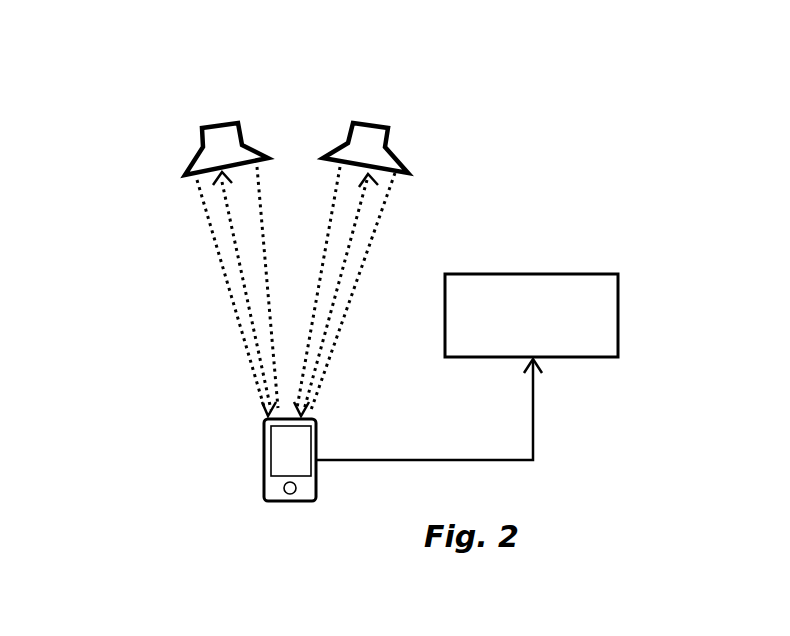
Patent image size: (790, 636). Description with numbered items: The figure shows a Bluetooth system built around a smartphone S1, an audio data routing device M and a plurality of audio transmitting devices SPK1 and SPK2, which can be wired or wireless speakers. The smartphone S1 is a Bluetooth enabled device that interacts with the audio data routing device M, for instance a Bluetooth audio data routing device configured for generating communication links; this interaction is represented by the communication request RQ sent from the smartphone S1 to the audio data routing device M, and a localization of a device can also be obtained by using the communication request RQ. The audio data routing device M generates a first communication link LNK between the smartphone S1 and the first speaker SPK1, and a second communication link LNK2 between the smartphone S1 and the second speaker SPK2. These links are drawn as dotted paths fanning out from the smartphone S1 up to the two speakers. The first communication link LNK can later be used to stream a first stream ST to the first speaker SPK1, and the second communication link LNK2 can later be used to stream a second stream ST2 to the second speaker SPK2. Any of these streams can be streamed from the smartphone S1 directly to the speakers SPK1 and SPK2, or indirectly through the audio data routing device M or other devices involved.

The first audio transmitting device SPK1 is at (212, 108).
The second audio transmitting device SPK2 is at (398, 110).
The first communication link LNK is at (206, 331).
The second communication link LNK2 is at (388, 264).
The first stream ST is at (237, 242).
The second stream ST2 is at (353, 218).
The smartphone S1 is at (228, 459).
The audio data routing device M is at (612, 248).
The communication request RQ is at (533, 423).